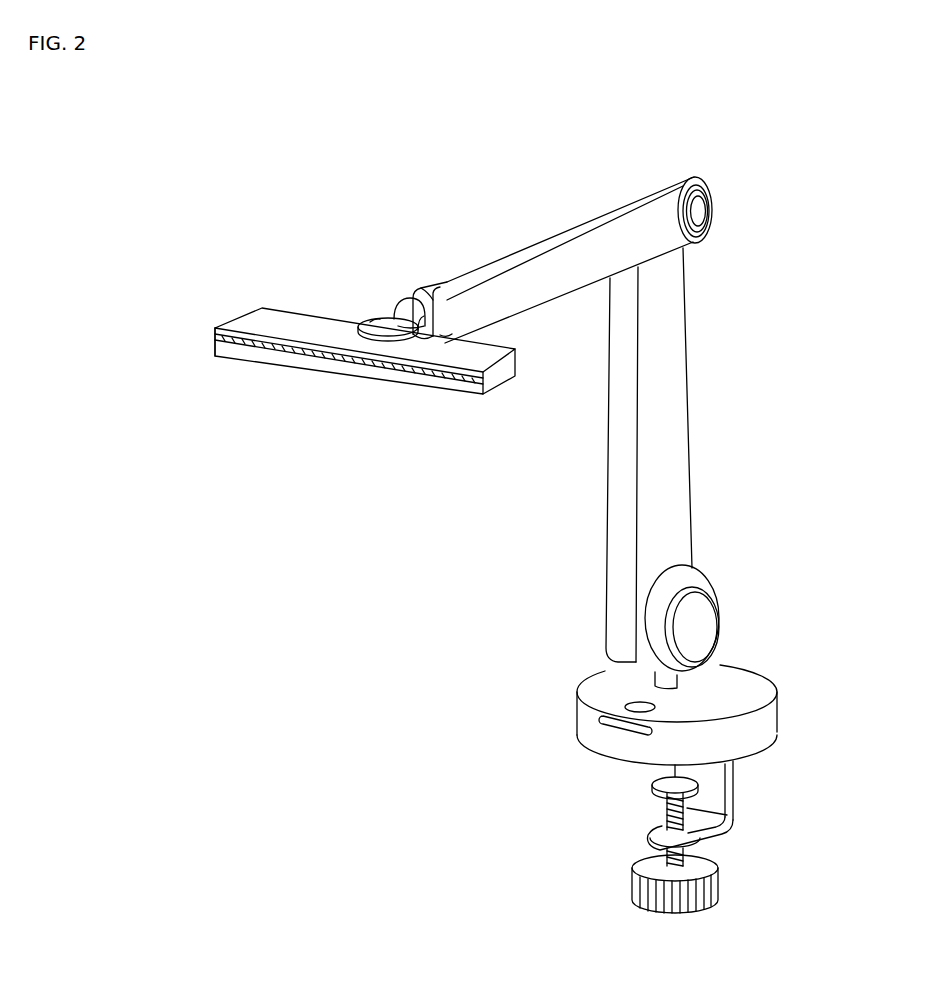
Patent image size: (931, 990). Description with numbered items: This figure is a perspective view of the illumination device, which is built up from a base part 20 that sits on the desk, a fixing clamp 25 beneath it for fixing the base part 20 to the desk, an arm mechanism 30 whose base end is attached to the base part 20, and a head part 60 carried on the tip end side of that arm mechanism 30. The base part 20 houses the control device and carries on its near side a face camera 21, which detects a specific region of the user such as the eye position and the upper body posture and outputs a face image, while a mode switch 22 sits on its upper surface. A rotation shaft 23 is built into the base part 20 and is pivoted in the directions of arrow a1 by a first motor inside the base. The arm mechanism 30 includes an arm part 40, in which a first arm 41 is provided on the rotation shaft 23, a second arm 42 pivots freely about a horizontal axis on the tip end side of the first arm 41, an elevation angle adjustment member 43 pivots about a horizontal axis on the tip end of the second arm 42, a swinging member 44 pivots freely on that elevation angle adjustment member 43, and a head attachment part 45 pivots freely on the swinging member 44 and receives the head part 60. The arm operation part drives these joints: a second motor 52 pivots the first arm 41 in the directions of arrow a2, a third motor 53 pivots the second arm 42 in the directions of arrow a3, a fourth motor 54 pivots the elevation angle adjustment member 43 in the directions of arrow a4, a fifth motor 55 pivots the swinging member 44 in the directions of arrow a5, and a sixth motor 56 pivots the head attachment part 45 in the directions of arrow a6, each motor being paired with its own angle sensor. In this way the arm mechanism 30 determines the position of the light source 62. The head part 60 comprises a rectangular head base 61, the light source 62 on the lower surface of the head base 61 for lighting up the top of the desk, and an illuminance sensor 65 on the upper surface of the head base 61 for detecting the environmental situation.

The base part 20 is at (776, 722).
The face camera 21 is at (622, 731).
The mode switch 22 is at (600, 690).
The rotation shaft 23 is at (678, 682).
The fixing clamp 25 is at (653, 803).
The arm mechanism 30 is at (688, 430).
The arm part 40 is at (688, 494).
The first arm 41 is at (680, 360).
The second arm 42 is at (547, 238).
The elevation angle adjustment member 43 is at (431, 305).
The swinging member 44 is at (396, 309).
The head attachment part 45 is at (378, 333).
The second motor 52 is at (712, 602).
The third motor 53 is at (708, 214).
The fourth motor 54 is at (414, 308).
The fifth motor 55 is at (428, 340).
The sixth motor 56 is at (368, 320).
The head part 60 is at (249, 313).
The head base 61 is at (214, 346).
The light source 62 is at (392, 386).
The illuminance sensor 65 is at (457, 366).
The arrow a1 is at (645, 681).
The arrow a2 is at (660, 537).
The arrow a3 is at (668, 237).
The arrow a4 is at (466, 279).
The arrow a5 is at (388, 307).
The arrow a6 is at (410, 343).